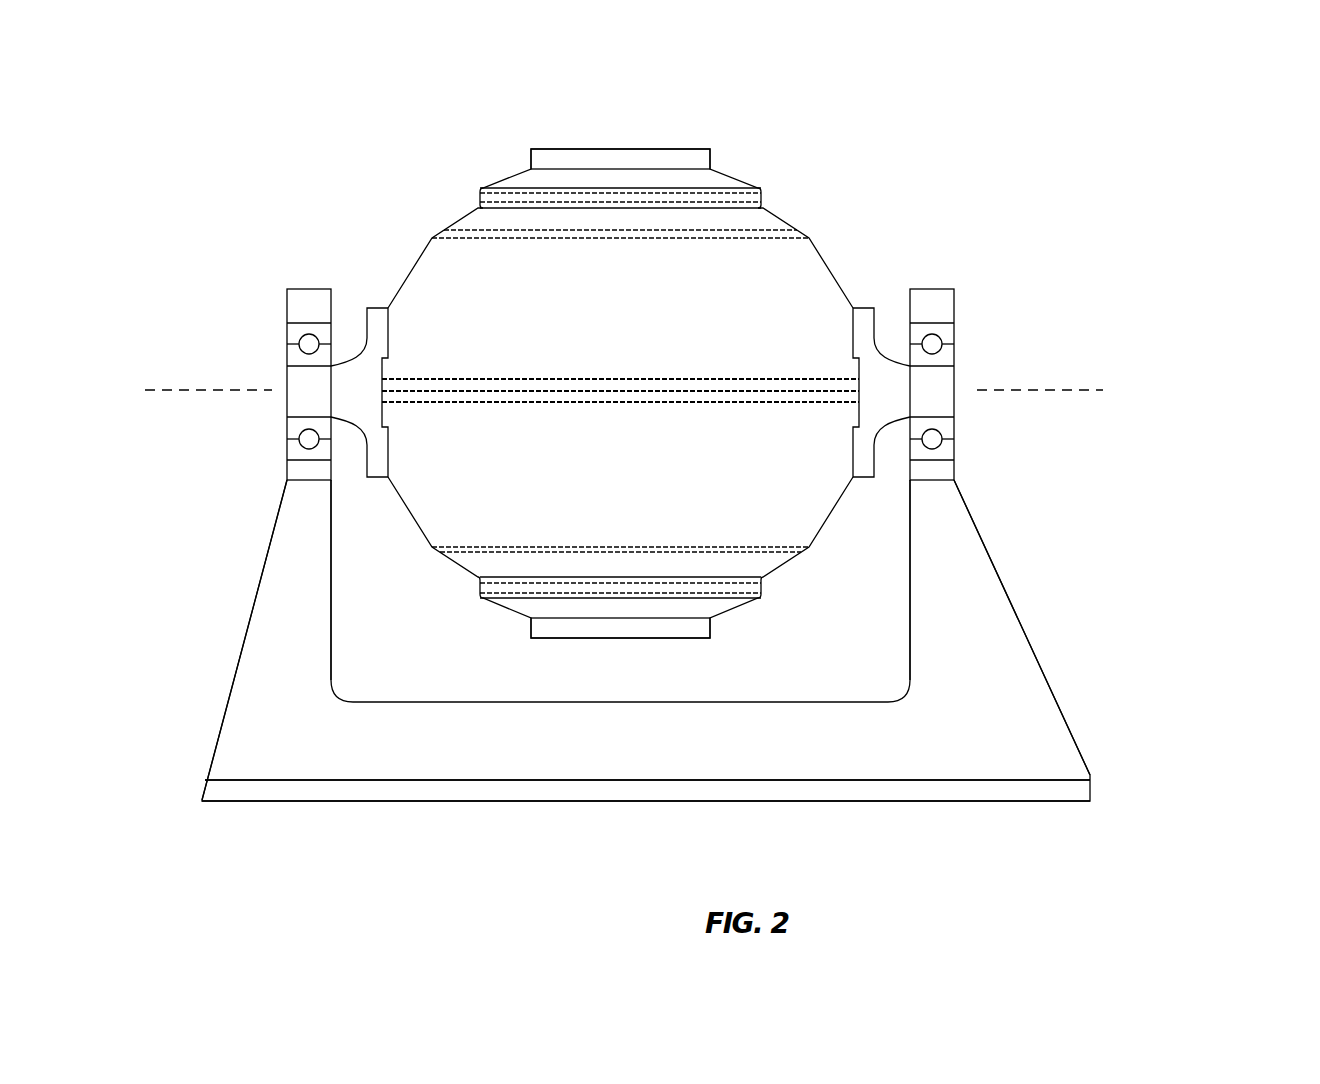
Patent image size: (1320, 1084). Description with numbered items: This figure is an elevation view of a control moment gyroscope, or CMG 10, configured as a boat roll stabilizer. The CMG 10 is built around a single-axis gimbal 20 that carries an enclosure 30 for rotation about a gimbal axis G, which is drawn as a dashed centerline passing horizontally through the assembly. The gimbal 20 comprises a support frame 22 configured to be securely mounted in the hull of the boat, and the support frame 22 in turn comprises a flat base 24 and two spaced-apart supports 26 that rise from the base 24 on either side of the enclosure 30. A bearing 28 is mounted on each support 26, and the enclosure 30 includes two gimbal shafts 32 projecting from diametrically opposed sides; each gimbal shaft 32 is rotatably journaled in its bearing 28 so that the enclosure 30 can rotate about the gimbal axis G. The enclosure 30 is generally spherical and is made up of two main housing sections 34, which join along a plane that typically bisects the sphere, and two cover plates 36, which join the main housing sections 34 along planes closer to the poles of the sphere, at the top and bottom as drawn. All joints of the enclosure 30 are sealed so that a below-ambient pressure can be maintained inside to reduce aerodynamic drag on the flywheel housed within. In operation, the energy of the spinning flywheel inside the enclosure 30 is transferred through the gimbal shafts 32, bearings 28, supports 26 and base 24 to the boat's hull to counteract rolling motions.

The CMG 10 is at (942, 118).
The single-axis gimbal 20 is at (1174, 400).
The support frame 22 is at (1083, 720).
The base 24 is at (817, 803).
The supports 26 is at (272, 598).
The bearing 28 is at (295, 336).
The enclosure 30 is at (821, 217).
The gimbal shafts 32 is at (306, 383).
The main housing sections 34 is at (634, 326).
The cover plates 36 is at (548, 178).
The gimbal axis G is at (624, 392).